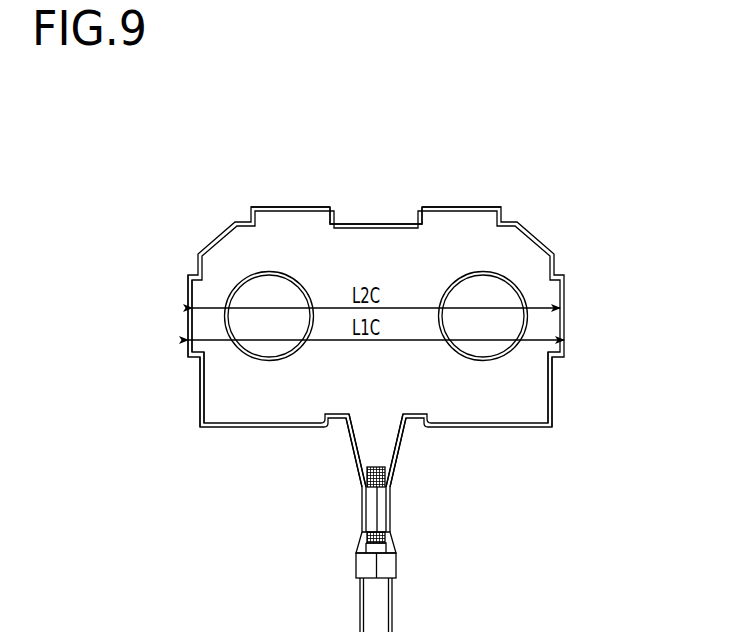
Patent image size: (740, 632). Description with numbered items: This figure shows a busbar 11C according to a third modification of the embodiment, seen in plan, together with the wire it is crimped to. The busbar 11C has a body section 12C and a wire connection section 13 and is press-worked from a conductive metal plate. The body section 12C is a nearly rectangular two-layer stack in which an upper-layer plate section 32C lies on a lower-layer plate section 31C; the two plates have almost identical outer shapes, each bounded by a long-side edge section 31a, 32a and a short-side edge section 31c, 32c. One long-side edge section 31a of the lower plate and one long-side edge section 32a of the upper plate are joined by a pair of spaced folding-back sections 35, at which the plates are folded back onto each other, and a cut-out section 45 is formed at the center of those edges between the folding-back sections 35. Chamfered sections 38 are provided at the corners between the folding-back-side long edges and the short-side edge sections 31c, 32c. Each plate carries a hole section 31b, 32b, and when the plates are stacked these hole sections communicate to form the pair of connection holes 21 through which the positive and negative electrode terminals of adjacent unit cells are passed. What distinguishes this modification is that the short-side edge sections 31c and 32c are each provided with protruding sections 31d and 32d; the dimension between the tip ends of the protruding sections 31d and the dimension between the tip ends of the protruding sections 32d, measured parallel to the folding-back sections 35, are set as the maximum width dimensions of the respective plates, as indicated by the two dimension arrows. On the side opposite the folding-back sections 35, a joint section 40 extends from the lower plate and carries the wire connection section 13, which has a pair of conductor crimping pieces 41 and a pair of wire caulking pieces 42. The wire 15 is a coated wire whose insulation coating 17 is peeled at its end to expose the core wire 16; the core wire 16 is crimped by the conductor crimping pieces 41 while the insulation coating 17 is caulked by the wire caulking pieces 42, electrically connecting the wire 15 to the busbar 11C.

The busbar 11C is at (171, 206).
The body section 12C is at (561, 431).
The wire connection section 13 is at (407, 542).
The wire 15 is at (398, 598).
The core wire 16 is at (393, 478).
The insulation coating 17 is at (360, 598).
The connection holes 21 is at (263, 299).
The long-side edge section 31a is at (515, 223).
The hole section 31b is at (263, 347).
The short-side edge section 31c is at (198, 420).
The protruding sections 31d is at (187, 320).
The outer member 31C is at (247, 398).
The long-side edge section 32a is at (505, 218).
The hole section 32b is at (276, 283).
The short-side edge section 32c is at (198, 366).
The protruding sections 32d is at (187, 297).
The inner member 32C is at (443, 236).
The folding-back sections 35 is at (258, 206).
The chamfered sections 38 is at (233, 281).
The joint section 40 is at (392, 445).
The conductor crimping pieces 41 is at (383, 517).
The wire caulking pieces 42 is at (356, 563).
The cut-out section 45 is at (344, 222).